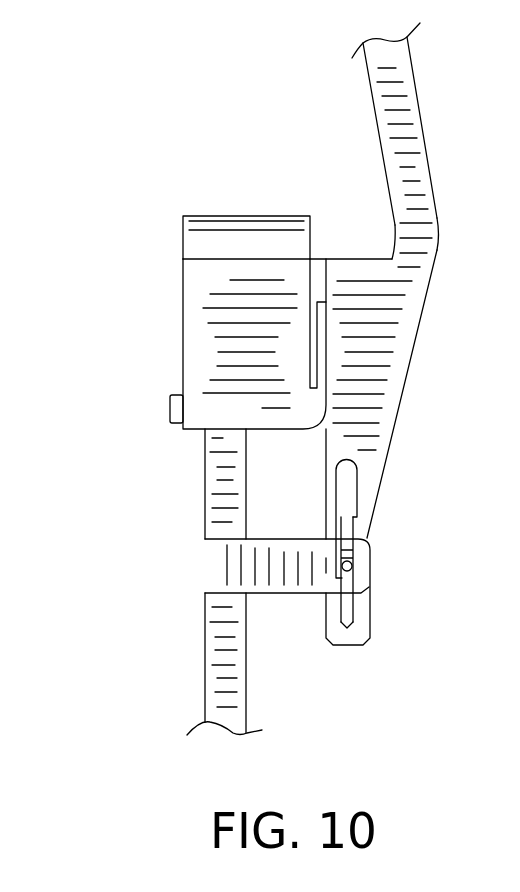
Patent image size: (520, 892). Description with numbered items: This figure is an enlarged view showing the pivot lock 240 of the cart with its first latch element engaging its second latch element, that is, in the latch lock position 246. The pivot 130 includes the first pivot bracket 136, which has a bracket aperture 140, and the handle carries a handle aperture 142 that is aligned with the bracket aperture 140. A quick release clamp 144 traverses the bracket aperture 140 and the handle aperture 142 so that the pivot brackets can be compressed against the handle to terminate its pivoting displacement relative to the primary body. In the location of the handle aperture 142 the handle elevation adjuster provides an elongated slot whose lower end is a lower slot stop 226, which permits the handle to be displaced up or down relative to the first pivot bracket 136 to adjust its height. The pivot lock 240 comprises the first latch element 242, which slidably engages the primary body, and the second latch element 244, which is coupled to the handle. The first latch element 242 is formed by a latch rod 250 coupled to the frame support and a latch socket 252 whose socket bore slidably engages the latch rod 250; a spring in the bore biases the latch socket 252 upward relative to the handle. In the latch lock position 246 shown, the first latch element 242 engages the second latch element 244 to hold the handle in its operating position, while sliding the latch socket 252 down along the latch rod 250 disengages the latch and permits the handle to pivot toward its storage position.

The latch lock position 246 is at (243, 227).
The first pivot bracket 136 is at (412, 62).
The second latch element 244 is at (347, 258).
The pivot lock 240 is at (228, 215).
The latch socket 252 is at (183, 247).
The first latch element 242 is at (183, 315).
The latch rod 250 is at (205, 495).
The quick release clamp 144 is at (353, 495).
The pivot 130 is at (355, 557).
The bracket aperture 140 is at (352, 574).
The handle aperture 142 is at (353, 620).
The lower slot stop 226 is at (346, 629).